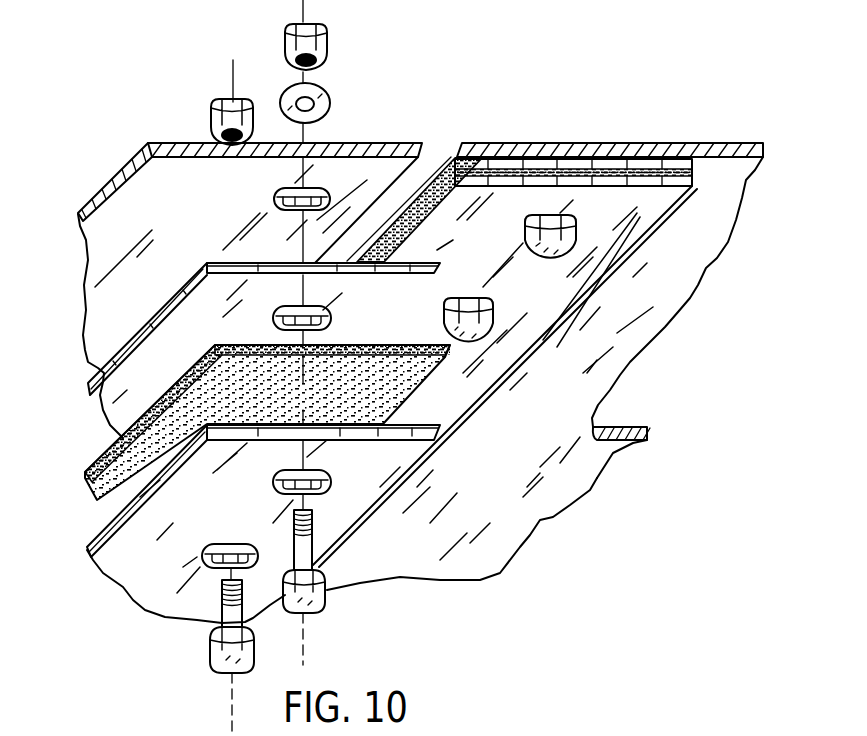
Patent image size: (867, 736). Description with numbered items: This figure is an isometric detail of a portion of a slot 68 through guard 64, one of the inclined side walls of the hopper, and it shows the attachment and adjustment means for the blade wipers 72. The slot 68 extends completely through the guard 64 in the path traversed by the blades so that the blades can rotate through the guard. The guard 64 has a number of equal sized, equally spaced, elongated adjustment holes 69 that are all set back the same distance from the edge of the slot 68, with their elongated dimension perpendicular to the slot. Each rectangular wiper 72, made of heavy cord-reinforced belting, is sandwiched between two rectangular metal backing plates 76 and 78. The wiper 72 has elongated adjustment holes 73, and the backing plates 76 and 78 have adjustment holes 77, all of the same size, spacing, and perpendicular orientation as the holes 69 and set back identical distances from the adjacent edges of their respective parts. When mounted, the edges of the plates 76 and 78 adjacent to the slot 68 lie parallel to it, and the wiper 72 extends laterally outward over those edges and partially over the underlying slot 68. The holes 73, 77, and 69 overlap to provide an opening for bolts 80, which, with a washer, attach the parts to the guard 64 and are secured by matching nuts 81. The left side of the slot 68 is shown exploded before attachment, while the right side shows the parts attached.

The guard 64 is at (82, 230).
The slot 68 is at (434, 159).
The adjustment hole 69 is at (276, 196).
The wiper 72 is at (698, 171).
The adjustment hole 73 is at (276, 393).
The backing plate 76 is at (670, 160).
The adjustment hole 77 is at (280, 314).
The backing plate 78 is at (656, 218).
The bolt 80 is at (216, 668).
The nut 81 is at (289, 40).